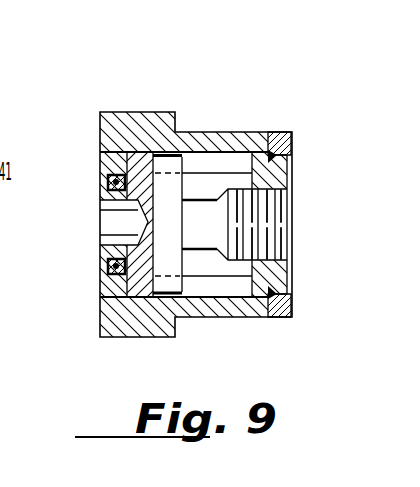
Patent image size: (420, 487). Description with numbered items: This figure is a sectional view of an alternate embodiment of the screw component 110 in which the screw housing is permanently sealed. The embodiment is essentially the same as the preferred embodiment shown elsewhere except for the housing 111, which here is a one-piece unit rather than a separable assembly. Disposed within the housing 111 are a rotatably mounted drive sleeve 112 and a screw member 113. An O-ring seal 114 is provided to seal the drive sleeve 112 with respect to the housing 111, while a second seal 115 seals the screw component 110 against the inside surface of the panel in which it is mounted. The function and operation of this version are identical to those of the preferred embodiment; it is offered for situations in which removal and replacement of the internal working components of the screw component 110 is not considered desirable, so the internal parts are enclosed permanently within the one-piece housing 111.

The screw component 110 is at (175, 194).
The housing 111 is at (203, 318).
The drive sleeve 112 is at (143, 147).
The screw member 113 is at (210, 190).
The O-ring seal 114 is at (110, 266).
The second seal 115 is at (286, 319).